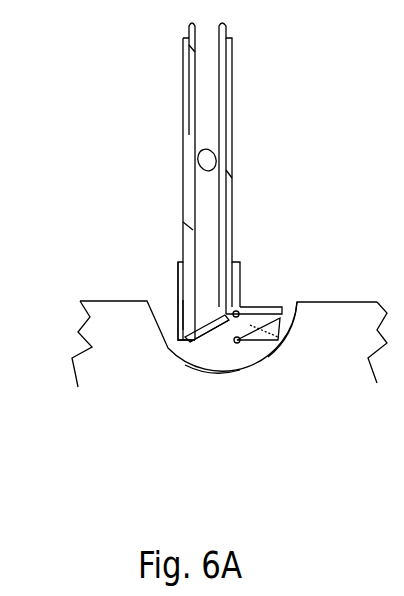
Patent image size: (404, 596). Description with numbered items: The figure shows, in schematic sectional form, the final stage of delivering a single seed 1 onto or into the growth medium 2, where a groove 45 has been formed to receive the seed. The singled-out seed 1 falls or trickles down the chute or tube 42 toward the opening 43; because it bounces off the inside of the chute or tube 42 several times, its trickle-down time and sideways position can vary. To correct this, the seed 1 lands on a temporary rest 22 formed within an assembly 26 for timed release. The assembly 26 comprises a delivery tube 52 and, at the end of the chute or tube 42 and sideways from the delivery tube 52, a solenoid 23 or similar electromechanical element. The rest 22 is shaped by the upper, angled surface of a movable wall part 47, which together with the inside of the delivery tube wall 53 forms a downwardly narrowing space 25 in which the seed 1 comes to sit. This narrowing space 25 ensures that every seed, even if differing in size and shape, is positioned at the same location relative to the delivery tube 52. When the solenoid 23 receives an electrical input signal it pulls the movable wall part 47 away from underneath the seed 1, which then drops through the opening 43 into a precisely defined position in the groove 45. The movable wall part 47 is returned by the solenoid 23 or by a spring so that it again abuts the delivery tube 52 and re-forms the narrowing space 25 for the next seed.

The seed 1 is at (213, 160).
The growth medium 2 is at (288, 392).
The rest 22 is at (228, 313).
The solenoid 23 is at (280, 318).
The downwardly narrowing space 25 is at (192, 321).
The assembly 26 is at (276, 256).
The chute or tube 42 is at (233, 100).
The opening 43 is at (220, 358).
The groove 45 is at (283, 340).
The movable wall part 47 is at (228, 320).
The delivery tube 52 is at (193, 285).
The delivery tube wall 53 is at (190, 337).